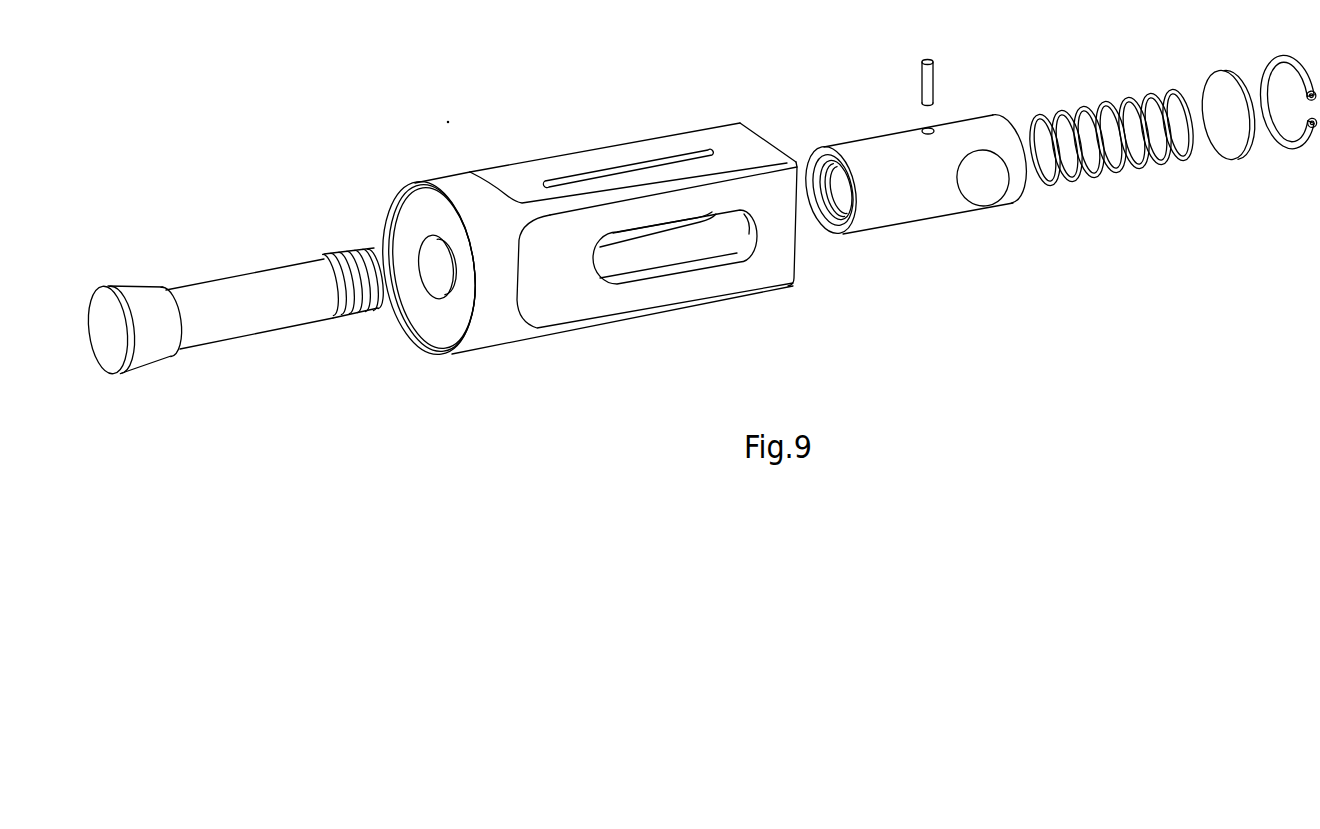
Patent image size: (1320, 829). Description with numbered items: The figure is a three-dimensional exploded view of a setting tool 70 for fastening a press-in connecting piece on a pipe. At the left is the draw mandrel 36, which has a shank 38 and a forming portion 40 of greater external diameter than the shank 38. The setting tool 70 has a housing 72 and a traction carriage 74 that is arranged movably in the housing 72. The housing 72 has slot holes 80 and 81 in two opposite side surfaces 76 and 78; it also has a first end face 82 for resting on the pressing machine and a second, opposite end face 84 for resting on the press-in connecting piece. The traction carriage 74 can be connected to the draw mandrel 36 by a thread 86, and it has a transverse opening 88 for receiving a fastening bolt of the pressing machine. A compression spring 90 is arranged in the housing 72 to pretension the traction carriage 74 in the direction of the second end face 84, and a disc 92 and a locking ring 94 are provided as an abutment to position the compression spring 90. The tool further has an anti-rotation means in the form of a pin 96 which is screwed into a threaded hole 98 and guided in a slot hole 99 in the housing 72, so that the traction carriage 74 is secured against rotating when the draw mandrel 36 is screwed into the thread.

The draw mandrel 36 is at (222, 247).
The shank 38 is at (282, 317).
The forming portion 40 is at (155, 347).
The setting tool 70 is at (448, 122).
The housing 72 is at (503, 322).
The traction carriage 74 is at (908, 203).
The side surface 76 is at (770, 272).
The side surface 78 is at (702, 120).
The slot hole 80 is at (705, 265).
The slot hole 81 is at (637, 235).
The first end face 82 is at (778, 127).
The second end face 84 is at (440, 322).
The thread 86 is at (833, 197).
The transverse opening 88 is at (983, 188).
The compression spring 90 is at (1112, 172).
The disc 92 is at (1232, 148).
The locking ring 94 is at (1295, 148).
The pin 96 is at (928, 75).
The threaded hole 98 is at (933, 124).
The slot hole 99 is at (601, 174).